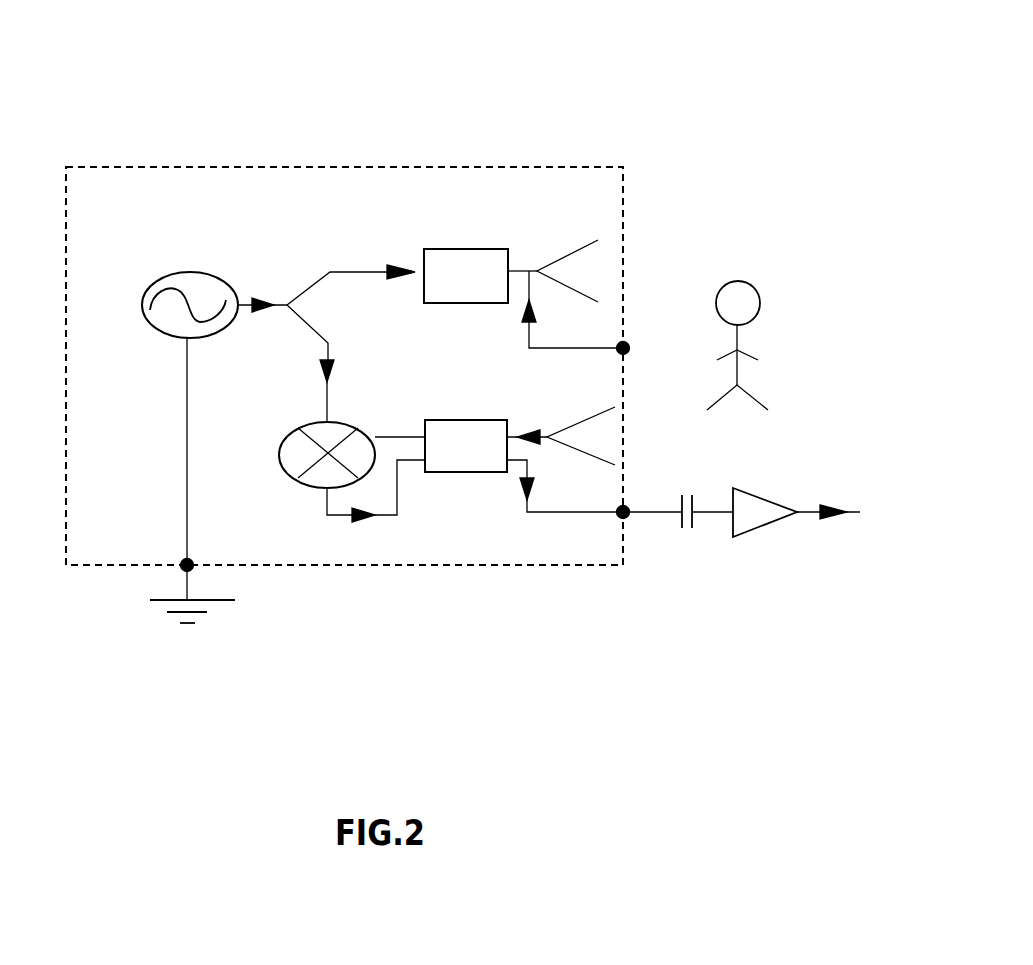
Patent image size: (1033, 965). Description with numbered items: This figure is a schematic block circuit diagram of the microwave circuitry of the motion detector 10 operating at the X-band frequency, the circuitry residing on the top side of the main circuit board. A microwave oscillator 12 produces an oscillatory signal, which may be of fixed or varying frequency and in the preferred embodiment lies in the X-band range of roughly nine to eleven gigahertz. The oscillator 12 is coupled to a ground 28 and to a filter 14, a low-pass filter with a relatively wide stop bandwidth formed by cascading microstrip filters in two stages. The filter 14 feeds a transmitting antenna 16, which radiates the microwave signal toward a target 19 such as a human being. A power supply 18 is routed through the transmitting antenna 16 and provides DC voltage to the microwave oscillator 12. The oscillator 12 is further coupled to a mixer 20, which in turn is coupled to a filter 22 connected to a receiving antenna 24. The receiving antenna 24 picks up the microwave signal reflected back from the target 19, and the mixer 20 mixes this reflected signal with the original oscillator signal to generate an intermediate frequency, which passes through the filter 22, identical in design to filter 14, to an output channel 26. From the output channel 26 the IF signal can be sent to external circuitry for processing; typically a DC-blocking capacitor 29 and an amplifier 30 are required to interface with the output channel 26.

The microwave motion sensor module 10 is at (342, 167).
The microwave oscillator 12 is at (217, 287).
The filter 14 is at (440, 290).
The transmitting antenna 16 is at (587, 245).
The power supply 18 is at (623, 348).
The target 19 is at (753, 305).
The mixer 20 is at (323, 478).
The filter 22 is at (443, 467).
The receiving antenna 24 is at (590, 418).
The output channel 26 is at (625, 518).
The ground 28 is at (222, 602).
The DC-blocking capacitor 29 is at (688, 525).
The amplifier 30 is at (770, 507).